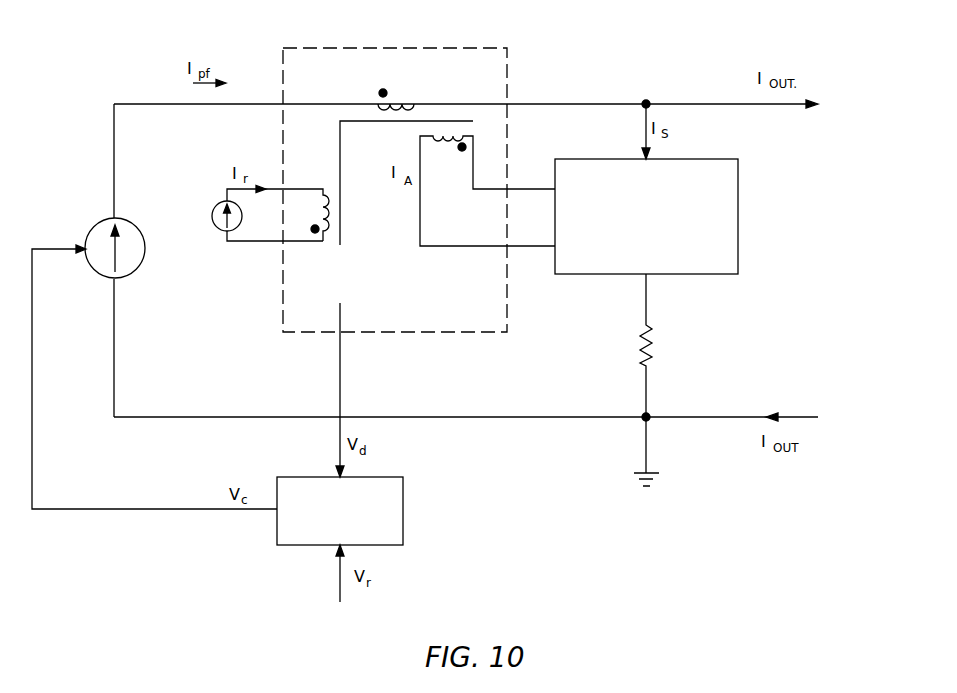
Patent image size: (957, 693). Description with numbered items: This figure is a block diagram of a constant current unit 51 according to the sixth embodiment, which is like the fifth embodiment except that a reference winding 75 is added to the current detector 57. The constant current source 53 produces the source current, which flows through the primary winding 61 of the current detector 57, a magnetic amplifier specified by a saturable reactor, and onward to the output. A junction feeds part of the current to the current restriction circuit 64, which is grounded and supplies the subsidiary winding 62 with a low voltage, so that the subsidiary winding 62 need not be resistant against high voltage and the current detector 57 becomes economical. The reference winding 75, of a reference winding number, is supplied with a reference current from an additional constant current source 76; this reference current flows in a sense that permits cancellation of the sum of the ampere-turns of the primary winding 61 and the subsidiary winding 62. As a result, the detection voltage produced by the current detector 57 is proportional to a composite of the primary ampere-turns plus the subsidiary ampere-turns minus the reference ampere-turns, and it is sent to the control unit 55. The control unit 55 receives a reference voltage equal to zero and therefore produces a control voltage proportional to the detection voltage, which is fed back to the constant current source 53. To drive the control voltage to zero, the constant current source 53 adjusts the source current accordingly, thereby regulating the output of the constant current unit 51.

The constant current unit 51 is at (243, 535).
The constant current source 53 is at (132, 220).
The control unit 55 is at (403, 518).
The current detector 57 is at (507, 82).
The primary winding 61 is at (397, 95).
The subsidiary winding 62 is at (443, 143).
The current restriction circuit 64 is at (738, 212).
The reference winding 75 is at (325, 244).
The additional constant current source 76 is at (213, 230).